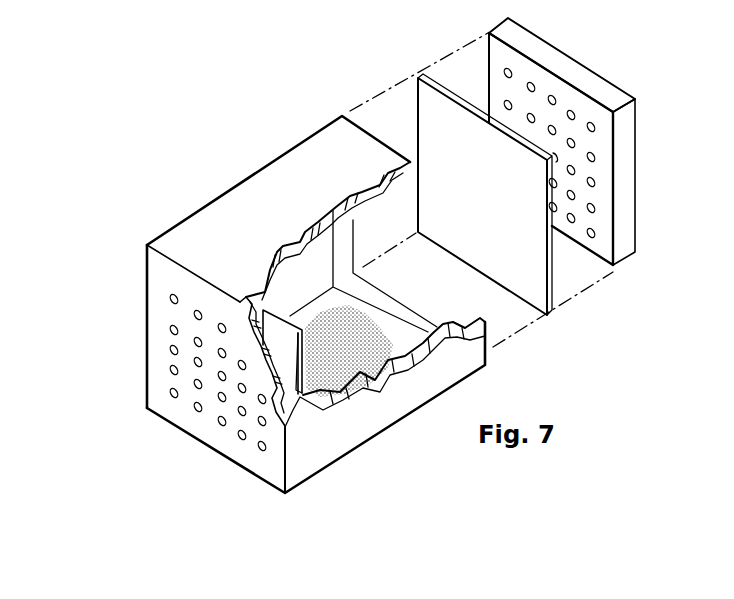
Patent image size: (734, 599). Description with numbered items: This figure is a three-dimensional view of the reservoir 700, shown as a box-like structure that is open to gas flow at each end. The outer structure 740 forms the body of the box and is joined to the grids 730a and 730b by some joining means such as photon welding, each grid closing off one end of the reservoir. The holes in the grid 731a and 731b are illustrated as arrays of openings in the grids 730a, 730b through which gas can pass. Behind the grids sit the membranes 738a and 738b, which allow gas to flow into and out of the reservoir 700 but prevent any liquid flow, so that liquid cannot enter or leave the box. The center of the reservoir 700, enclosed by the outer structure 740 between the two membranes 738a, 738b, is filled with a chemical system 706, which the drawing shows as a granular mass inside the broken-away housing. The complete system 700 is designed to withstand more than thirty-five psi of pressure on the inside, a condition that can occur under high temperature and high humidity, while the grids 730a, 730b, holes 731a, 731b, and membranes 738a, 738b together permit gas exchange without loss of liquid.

The reservoir 700 is at (531, 348).
The chemical system 706 is at (355, 318).
The grid 730a is at (160, 272).
The grid 730b is at (628, 237).
The holes in the grid 731a is at (168, 372).
The holes in the grid 731b is at (552, 102).
The membrane 738a is at (272, 277).
The membrane 738b is at (493, 193).
The outer structure 740 is at (309, 200).